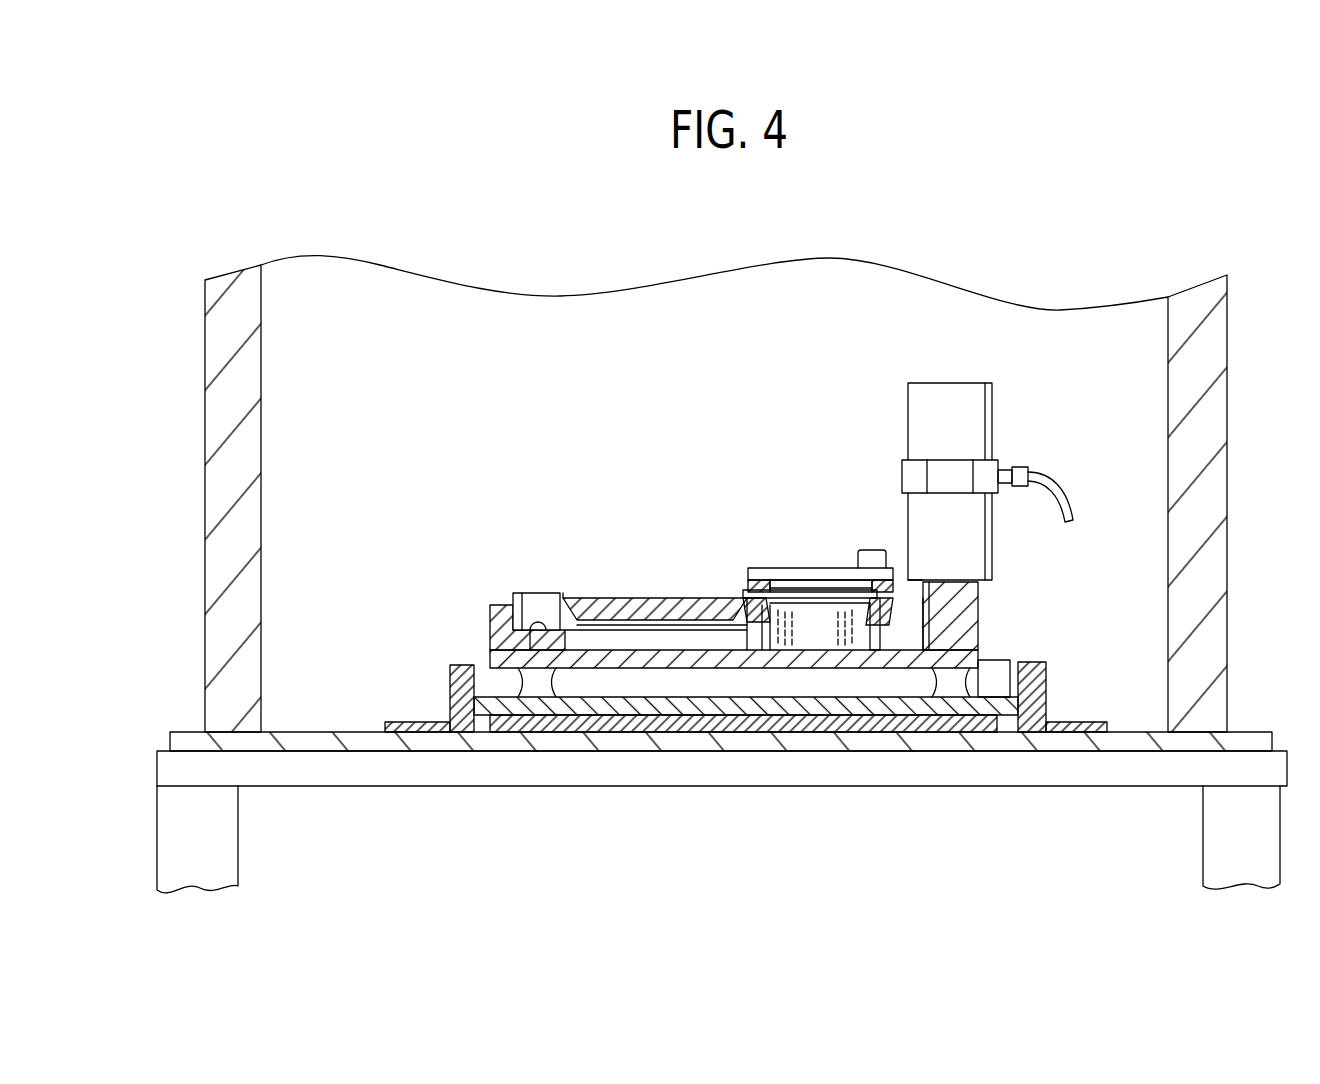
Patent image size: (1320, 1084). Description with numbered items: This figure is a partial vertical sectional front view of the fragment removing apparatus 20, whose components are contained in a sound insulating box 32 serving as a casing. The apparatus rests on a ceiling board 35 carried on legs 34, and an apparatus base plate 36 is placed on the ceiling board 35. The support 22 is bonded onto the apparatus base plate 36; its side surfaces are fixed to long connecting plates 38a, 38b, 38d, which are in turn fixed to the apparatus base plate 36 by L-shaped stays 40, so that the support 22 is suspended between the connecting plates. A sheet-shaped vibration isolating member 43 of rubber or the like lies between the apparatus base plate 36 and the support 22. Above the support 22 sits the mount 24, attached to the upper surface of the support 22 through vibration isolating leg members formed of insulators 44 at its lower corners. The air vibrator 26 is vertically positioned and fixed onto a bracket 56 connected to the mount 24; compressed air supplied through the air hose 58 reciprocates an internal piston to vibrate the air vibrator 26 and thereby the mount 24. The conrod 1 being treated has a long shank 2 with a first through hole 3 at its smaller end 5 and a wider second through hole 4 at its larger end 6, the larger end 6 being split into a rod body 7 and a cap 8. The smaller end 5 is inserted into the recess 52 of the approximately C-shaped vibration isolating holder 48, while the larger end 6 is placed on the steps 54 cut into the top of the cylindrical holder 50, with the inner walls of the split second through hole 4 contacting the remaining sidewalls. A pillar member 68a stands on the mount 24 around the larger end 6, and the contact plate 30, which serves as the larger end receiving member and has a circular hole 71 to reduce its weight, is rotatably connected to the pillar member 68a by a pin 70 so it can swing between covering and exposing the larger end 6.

The conrod 1 is at (587, 597).
The shank 2 is at (620, 600).
The first through hole 3 is at (560, 600).
The second through hole 4 is at (892, 606).
The smaller end 5 is at (530, 595).
The larger end 6 is at (922, 580).
The rod body 7 is at (737, 598).
The cap 8 is at (882, 625).
The fragment removing apparatus 20 is at (1175, 231).
The support 22 is at (657, 735).
The mount 24 is at (642, 655).
The air vibrator 26 is at (978, 403).
The contact plate 30 is at (760, 582).
The sound insulating box 32 is at (1215, 613).
The legs 34 is at (1218, 858).
The ceiling board 35 is at (343, 773).
The apparatus base plate 36 is at (322, 738).
The connecting plate 38a is at (458, 676).
The connecting plate 38b is at (1036, 675).
The connecting plate 38d is at (997, 663).
The L-shaped stay 40 is at (417, 740).
The vibration isolating member 43 is at (853, 733).
The insulator 44 is at (540, 692).
The vibration isolating holder 48 is at (490, 622).
The holder 50 is at (813, 634).
The recess 52 is at (530, 640).
The steps 54 is at (737, 622).
The bracket 56 is at (978, 592).
The air hose 58 is at (1067, 487).
The pillar member 68a is at (795, 573).
The pin 70 is at (872, 552).
The circular hole 71 is at (855, 577).